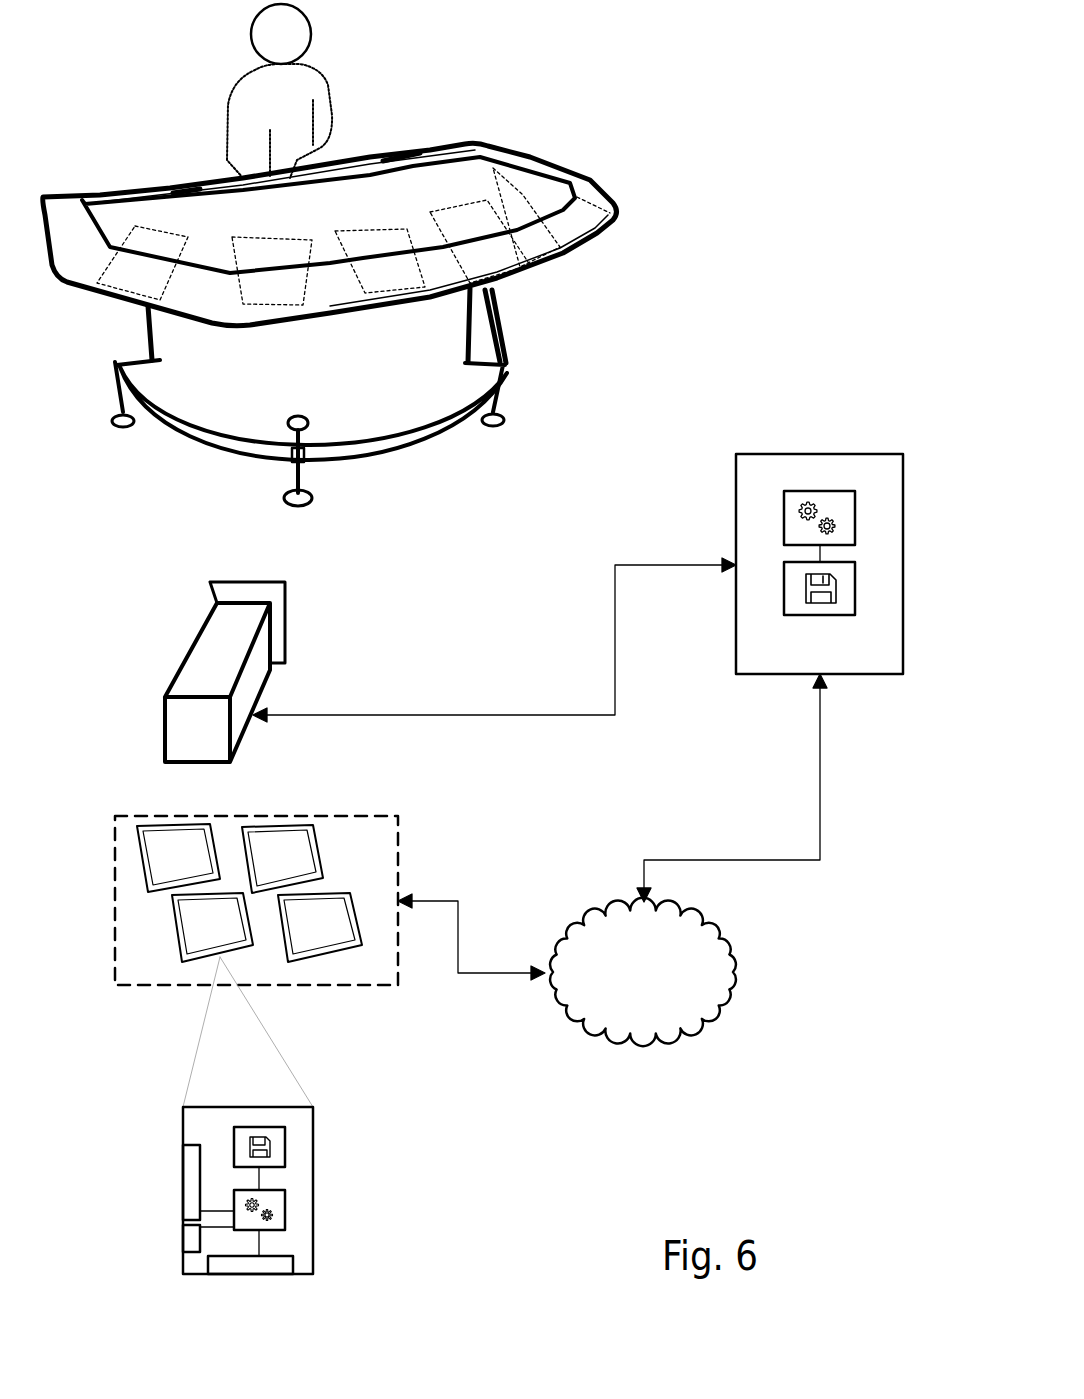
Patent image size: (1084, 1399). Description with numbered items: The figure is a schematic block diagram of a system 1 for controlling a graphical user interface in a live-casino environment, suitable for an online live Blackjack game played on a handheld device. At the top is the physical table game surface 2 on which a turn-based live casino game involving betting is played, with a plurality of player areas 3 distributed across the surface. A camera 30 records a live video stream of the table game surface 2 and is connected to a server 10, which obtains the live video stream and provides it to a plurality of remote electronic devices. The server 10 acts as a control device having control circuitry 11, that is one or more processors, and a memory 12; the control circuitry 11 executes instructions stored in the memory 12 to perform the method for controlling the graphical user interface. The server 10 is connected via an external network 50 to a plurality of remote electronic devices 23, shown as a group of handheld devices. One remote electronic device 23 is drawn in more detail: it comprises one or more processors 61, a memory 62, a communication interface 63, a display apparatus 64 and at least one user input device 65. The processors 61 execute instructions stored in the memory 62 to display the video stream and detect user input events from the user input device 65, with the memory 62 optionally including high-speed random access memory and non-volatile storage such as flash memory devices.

The system 1 is at (737, 270).
The physical table game surface 2 is at (571, 82).
The player areas 3 is at (135, 285).
The server 10 is at (844, 566).
The control circuitry 11 is at (820, 491).
The memory 12 is at (820, 615).
The remote electronic device 23 is at (267, 1078).
The camera 30 is at (285, 607).
The external network 50 is at (644, 1042).
The processors 61 is at (285, 1210).
The memory 62 is at (253, 1127).
The communication interface 63 is at (258, 1274).
The display apparatus 64 is at (183, 1180).
The user input device 65 is at (183, 1240).